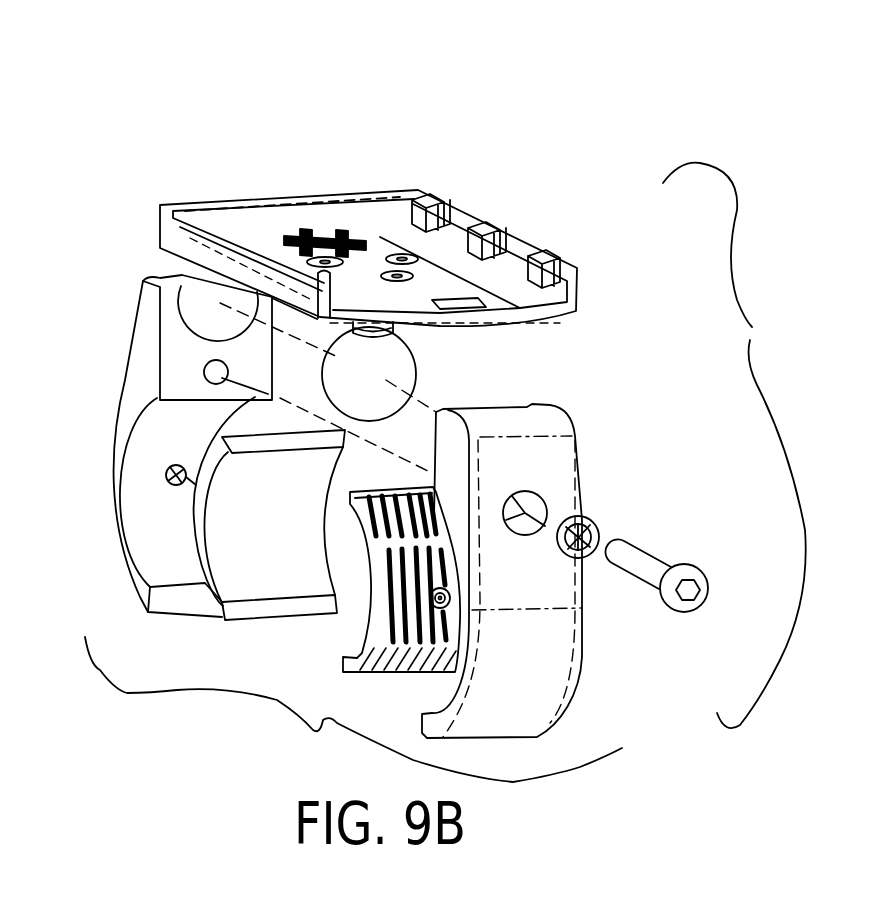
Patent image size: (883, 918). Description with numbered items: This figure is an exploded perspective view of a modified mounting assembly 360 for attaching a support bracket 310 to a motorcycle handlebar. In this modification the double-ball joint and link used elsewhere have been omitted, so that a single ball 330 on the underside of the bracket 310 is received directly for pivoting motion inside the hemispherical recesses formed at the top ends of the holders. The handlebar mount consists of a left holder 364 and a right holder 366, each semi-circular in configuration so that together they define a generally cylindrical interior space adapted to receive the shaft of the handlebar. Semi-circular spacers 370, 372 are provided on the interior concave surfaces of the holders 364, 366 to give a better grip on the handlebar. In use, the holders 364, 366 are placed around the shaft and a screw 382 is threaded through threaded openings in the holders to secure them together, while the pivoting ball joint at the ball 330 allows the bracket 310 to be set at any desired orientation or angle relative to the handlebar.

The support bracket 310 is at (440, 178).
The ball 330 is at (403, 360).
The mounting assembly 360 is at (752, 327).
The left holder 364 is at (137, 360).
The right holder 366 is at (566, 478).
The semi-circular spacer 370 is at (262, 625).
The semi-circular spacer 372 is at (385, 683).
The screw 382 is at (652, 556).